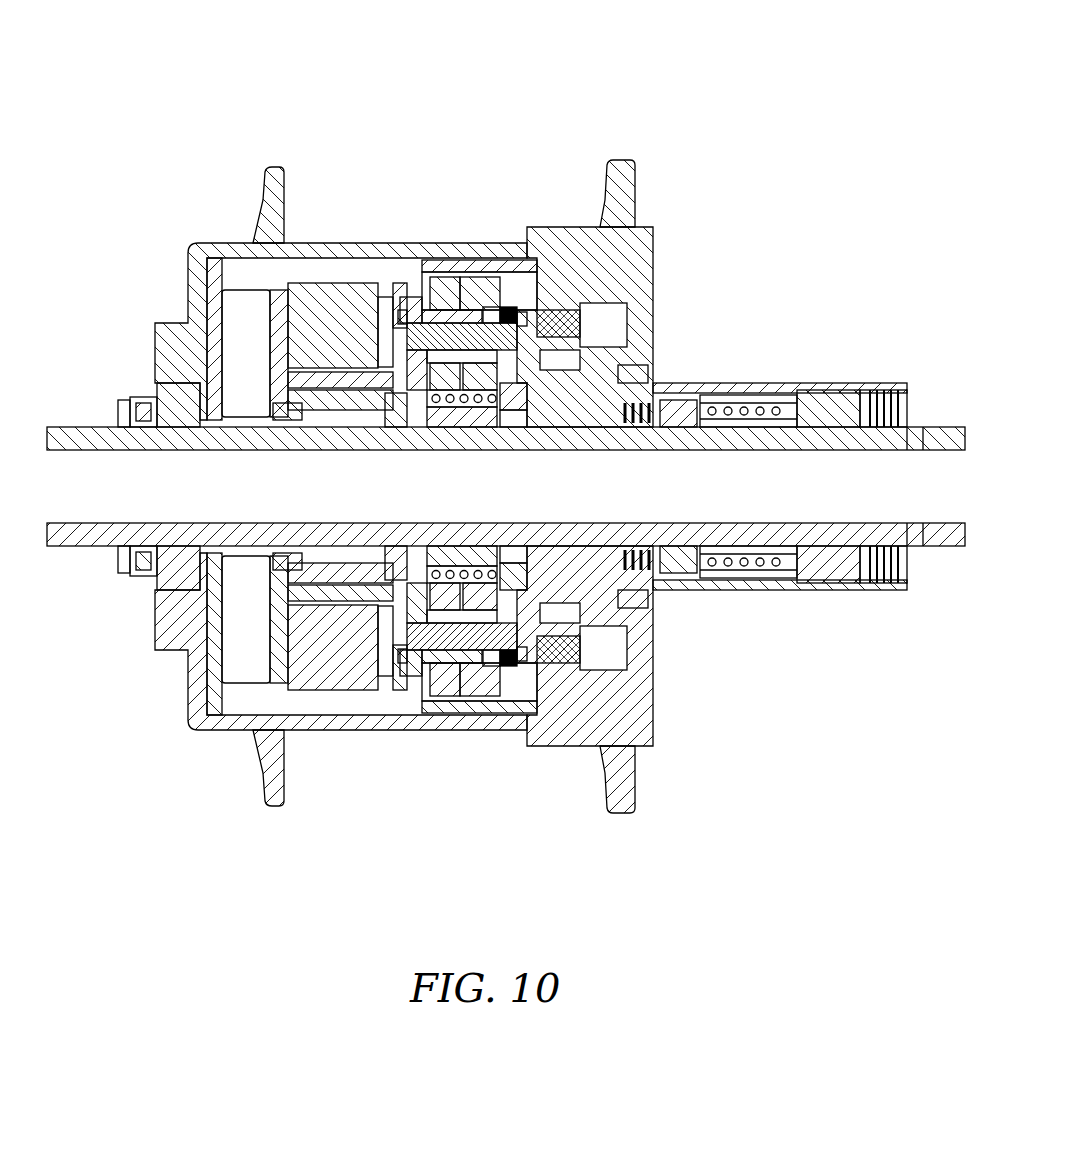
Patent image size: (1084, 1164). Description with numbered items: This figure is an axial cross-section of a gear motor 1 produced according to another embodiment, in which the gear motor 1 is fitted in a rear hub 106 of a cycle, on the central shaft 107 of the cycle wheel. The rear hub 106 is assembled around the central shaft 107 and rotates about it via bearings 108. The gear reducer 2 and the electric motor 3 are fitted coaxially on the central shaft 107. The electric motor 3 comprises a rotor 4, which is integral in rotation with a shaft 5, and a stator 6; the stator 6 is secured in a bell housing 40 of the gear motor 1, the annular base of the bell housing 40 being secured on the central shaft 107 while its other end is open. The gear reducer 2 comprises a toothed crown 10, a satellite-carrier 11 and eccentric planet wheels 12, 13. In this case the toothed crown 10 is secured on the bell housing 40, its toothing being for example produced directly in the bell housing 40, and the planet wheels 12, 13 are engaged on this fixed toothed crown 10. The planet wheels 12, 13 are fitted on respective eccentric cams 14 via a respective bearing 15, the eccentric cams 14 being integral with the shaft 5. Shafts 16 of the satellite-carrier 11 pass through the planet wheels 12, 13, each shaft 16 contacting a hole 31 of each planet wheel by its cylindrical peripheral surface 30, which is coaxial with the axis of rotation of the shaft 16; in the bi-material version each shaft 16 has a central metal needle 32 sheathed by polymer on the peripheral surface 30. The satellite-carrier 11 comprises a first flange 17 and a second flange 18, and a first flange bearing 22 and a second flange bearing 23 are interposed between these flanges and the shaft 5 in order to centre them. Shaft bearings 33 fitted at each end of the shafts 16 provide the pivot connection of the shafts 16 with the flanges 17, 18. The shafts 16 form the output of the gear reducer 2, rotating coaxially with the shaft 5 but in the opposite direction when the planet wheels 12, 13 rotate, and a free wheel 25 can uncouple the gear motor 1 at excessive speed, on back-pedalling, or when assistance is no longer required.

The gear motor 1 is at (128, 98).
The gear reducer 2 is at (517, 115).
The electric motor 3 is at (367, 115).
The rotor 4 is at (320, 597).
The shaft 5 is at (340, 578).
The stator 6 is at (307, 673).
The toothed crown 10 is at (437, 263).
The satellite-carrier 11 is at (405, 297).
The eccentric planet wheel 12 is at (447, 283).
The eccentric planet wheel 13 is at (477, 283).
The eccentric cam 14 is at (447, 407).
The bearing 15 is at (456, 409).
The shaft of the satellite-carrier 16 is at (417, 342).
The first flange 17 is at (405, 310).
The second flange 18 is at (553, 300).
The first flange bearing 22 is at (400, 410).
The second flange bearing 23 is at (518, 408).
The free wheel 25 is at (645, 595).
The peripheral surface 30 is at (485, 316).
The hole 31 is at (450, 307).
The metal needle 32 is at (500, 345).
The shaft bearing 33 is at (407, 318).
The bell housing 40 is at (222, 712).
The rear hub 106 is at (222, 240).
The central shaft 107 is at (97, 460).
The bearing 108 is at (168, 397).